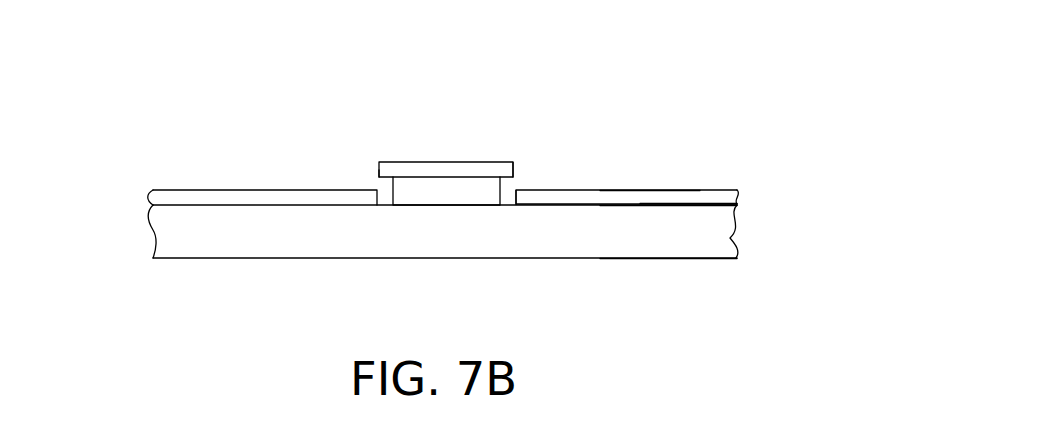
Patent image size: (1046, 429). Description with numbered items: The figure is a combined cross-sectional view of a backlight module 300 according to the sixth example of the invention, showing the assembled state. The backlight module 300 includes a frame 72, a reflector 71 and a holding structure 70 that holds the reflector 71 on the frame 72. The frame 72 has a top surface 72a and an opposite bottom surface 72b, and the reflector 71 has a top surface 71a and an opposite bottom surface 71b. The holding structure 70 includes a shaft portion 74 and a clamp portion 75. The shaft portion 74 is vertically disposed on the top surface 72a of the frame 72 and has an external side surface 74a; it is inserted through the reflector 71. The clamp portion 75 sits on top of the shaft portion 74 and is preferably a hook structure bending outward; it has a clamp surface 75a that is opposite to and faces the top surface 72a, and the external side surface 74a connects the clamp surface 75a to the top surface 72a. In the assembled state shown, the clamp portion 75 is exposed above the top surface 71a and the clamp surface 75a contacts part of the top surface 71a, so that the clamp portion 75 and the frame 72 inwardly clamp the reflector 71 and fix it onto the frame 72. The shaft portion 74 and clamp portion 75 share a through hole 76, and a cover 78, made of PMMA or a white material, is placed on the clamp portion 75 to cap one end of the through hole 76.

The backlight module 300 is at (767, 44).
The holding structure 70 is at (78, 95).
The reflector 71 is at (737, 195).
The top surface of reflector 71a is at (648, 191).
The bottom surface of reflector 71b is at (685, 203).
The frame 72 is at (740, 245).
The top surface of frame 72a is at (730, 239).
The bottom surface of frame 72b is at (683, 260).
The shaft portion 74 is at (377, 199).
The external side surface 74a is at (517, 200).
The clamp portion 75 is at (379, 177).
The clamp surface 75a is at (513, 177).
The through hole 76 is at (452, 187).
The cover 78 is at (379, 171).